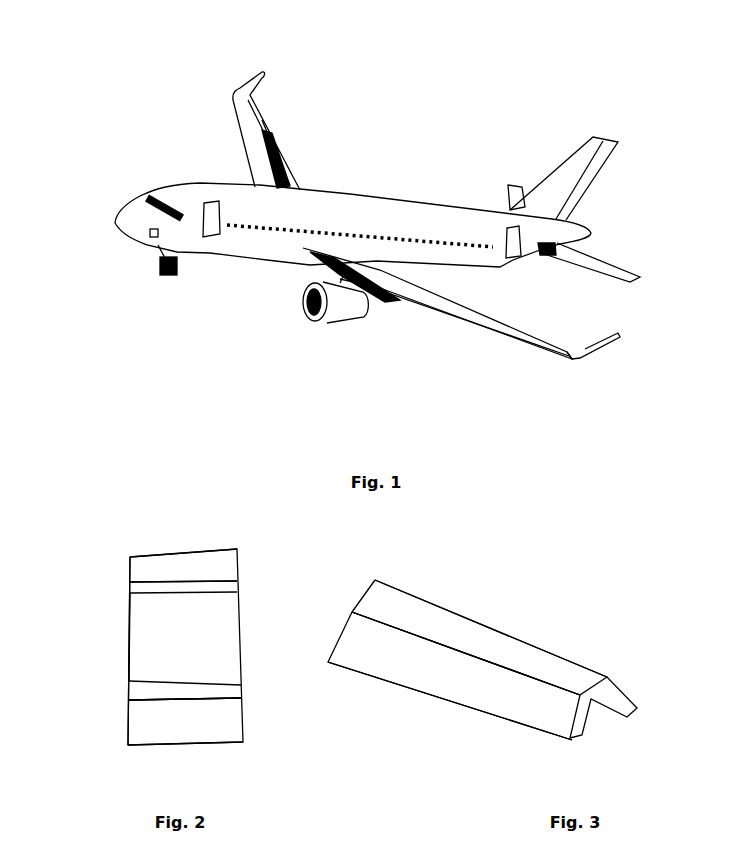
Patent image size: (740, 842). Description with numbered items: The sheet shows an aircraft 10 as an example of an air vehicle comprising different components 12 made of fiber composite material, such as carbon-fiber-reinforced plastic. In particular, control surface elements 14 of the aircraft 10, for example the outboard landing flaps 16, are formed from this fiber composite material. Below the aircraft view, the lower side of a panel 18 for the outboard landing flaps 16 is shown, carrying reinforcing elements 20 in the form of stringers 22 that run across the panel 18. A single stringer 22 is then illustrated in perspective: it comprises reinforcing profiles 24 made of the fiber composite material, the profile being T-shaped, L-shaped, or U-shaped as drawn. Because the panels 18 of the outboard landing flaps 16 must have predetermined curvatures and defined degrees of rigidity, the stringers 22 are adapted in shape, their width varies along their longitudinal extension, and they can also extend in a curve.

In FIG. 1, the aircraft 10 is at (561, 416).
In FIG. 1, the components 12 is at (272, 140).
In FIG. 2, the components 12 is at (115, 541).
In FIG. 3, the components 12 is at (601, 634).
In FIG. 1, the control surface elements 14 is at (283, 168).
In FIG. 2, the control surface elements 14 is at (104, 576).
In FIG. 2, the outboard landing flaps 16 is at (177, 538).
In FIG. 1, the panel 18 is at (272, 128).
In FIG. 2, the panel 18 is at (103, 630).
In FIG. 2, the reinforcing elements 20 is at (167, 585).
In FIG. 3, the reinforcing elements 20 is at (618, 666).
In FIG. 2, the stringer 22 is at (205, 590).
In FIG. 3, the stringer 22 is at (473, 607).
In FIG. 2, the reinforcing profiles 24 is at (219, 711).
In FIG. 3, the reinforcing profiles 24 is at (531, 631).